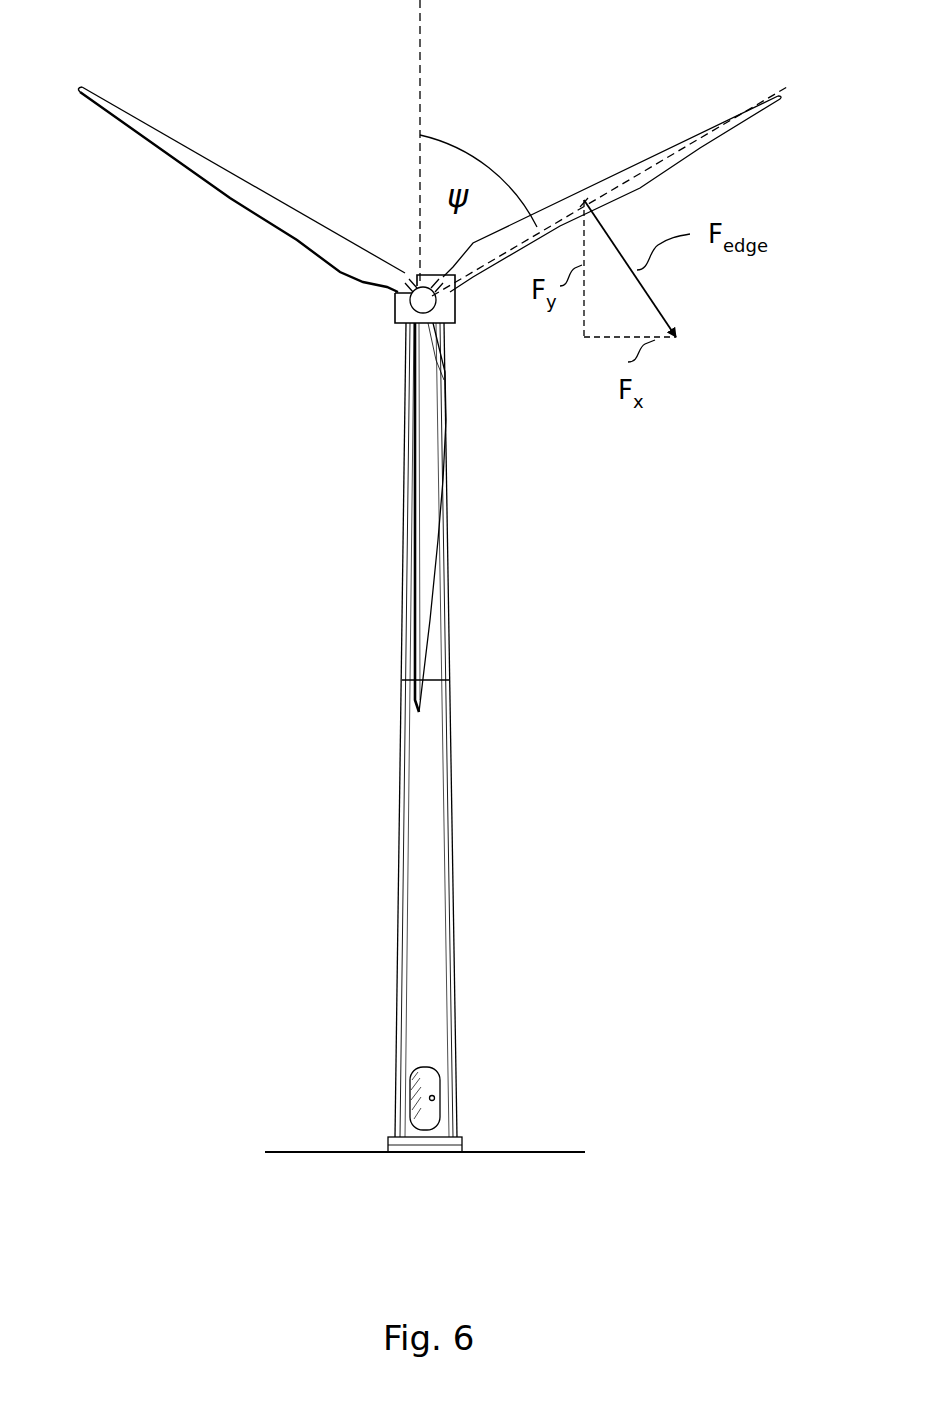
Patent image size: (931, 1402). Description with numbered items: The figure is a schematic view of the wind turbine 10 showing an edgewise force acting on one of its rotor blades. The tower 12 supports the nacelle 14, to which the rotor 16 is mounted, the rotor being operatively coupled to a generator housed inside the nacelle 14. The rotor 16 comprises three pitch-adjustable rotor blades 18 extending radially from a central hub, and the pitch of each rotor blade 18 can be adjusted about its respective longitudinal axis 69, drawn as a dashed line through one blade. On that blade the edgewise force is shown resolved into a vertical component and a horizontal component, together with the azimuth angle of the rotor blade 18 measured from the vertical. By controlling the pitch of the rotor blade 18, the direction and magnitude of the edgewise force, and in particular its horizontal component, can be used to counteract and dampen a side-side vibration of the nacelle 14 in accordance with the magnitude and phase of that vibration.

The wind turbine 10 is at (440, 580).
The tower 12 is at (450, 724).
The nacelle 14 is at (448, 318).
The rotor 16 is at (440, 360).
The rotor blade 18 is at (303, 220).
The longitudinal axis 69 is at (788, 85).